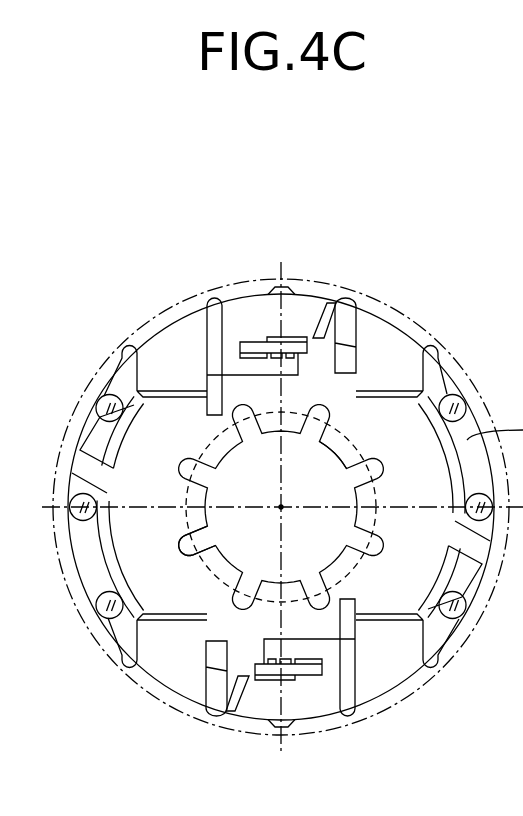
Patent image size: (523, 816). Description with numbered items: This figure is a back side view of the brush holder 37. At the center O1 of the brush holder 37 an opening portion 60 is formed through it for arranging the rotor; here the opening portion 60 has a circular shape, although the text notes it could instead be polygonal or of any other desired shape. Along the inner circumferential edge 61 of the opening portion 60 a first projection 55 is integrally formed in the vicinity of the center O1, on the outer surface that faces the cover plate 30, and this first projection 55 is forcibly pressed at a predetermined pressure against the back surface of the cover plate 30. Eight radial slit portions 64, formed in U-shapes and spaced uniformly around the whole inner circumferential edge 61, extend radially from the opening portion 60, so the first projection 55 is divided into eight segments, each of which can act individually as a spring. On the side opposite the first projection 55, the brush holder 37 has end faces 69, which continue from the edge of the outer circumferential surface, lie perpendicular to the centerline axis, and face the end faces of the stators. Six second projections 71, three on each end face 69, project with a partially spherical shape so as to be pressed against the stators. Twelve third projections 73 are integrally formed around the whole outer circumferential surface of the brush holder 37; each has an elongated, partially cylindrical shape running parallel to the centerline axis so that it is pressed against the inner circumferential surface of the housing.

The cover plate 30 is at (413, 320).
The brush holder 37 is at (380, 300).
The first projection 55 is at (337, 432).
The opening portion 60 is at (263, 490).
The inner circumferential edge 61 is at (333, 455).
The radial slit portions 64 is at (197, 543).
The end faces 69 is at (120, 384).
The second projections 71 is at (460, 398).
The third projections 73 is at (437, 344).
The center O1 is at (282, 509).